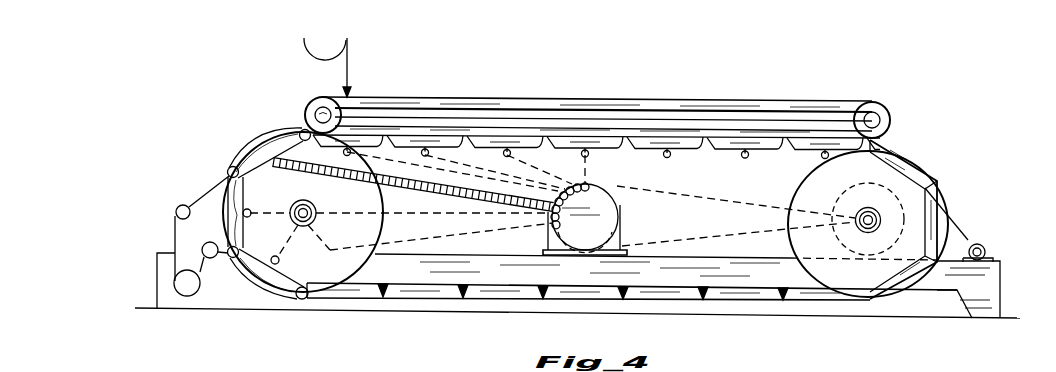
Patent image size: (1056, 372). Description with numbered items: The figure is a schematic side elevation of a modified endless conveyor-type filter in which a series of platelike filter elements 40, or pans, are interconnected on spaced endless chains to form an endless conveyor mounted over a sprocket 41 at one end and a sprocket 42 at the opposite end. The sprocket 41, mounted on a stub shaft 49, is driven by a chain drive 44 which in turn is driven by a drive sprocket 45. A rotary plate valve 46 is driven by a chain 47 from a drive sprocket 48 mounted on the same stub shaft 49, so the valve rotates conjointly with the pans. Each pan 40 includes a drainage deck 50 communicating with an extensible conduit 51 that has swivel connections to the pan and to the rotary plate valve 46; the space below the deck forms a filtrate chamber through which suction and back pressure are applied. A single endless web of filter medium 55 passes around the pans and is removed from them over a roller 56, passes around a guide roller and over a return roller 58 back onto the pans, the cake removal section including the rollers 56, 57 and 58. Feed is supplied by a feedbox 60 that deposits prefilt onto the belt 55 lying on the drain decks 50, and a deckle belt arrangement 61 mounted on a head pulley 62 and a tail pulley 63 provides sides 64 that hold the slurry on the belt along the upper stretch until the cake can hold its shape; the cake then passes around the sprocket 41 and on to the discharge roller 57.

The platelike filter element 40 is at (303, 131).
The sprocket 41 is at (798, 190).
The sprocket 42 is at (403, 226).
The chain drive 44 is at (962, 230).
The drive sprocket 45 is at (988, 248).
The rotary plate valve 46 is at (622, 211).
The chain 47 is at (727, 245).
The drive sprocket 48 is at (862, 212).
The stub shaft 49 is at (866, 233).
The drainage deck 50 is at (262, 141).
The extensible conduit 51 is at (340, 183).
The endless web of filter medium 55 is at (172, 239).
The roller 56 is at (216, 262).
The discharge roller 57 is at (190, 297).
The return roller 58 is at (177, 208).
The feedbox 60 is at (350, 60).
The deckle belt arrangement 61 is at (705, 100).
The head pulley 62 is at (321, 108).
The tail pulley 63 is at (876, 116).
The sides 64 is at (590, 128).